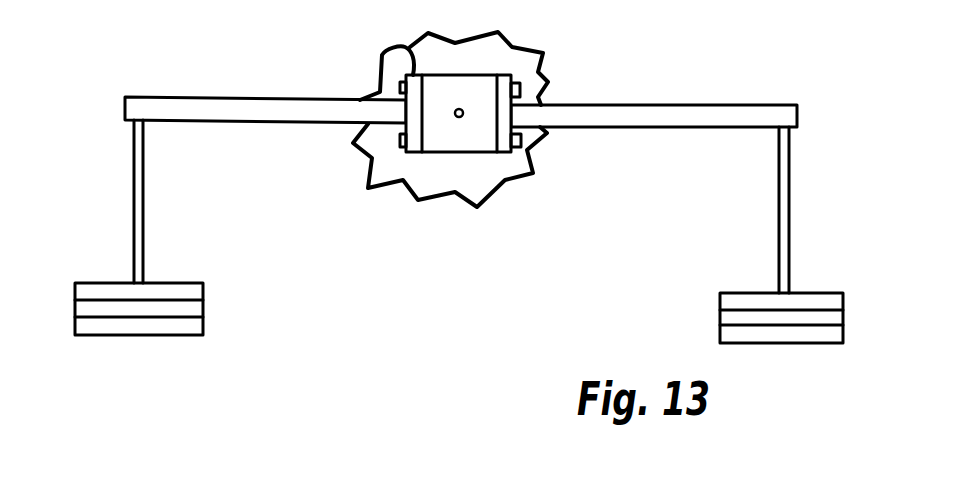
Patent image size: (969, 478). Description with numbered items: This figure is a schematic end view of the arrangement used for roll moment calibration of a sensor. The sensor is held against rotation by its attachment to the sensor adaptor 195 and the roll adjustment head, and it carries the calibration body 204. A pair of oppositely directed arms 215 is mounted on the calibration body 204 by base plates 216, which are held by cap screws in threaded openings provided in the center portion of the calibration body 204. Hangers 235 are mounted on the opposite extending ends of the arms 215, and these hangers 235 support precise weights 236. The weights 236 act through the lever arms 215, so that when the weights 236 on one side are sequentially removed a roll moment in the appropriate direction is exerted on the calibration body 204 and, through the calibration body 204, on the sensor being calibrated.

The sensor adaptor 195 is at (503, 60).
The calibration body 204 is at (440, 138).
The arms 215 is at (177, 105).
The base plates 216 is at (410, 36).
The hangers 235 is at (472, 164).
The weights 236 is at (180, 308).